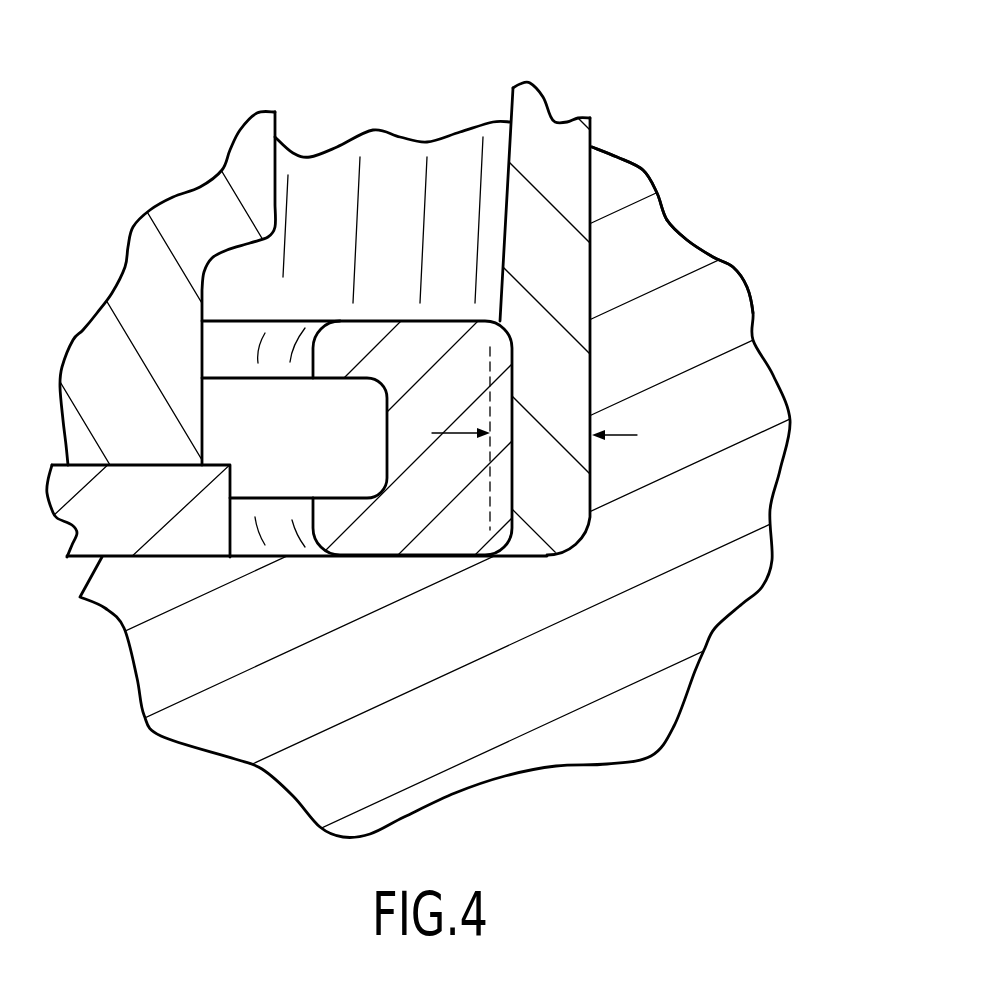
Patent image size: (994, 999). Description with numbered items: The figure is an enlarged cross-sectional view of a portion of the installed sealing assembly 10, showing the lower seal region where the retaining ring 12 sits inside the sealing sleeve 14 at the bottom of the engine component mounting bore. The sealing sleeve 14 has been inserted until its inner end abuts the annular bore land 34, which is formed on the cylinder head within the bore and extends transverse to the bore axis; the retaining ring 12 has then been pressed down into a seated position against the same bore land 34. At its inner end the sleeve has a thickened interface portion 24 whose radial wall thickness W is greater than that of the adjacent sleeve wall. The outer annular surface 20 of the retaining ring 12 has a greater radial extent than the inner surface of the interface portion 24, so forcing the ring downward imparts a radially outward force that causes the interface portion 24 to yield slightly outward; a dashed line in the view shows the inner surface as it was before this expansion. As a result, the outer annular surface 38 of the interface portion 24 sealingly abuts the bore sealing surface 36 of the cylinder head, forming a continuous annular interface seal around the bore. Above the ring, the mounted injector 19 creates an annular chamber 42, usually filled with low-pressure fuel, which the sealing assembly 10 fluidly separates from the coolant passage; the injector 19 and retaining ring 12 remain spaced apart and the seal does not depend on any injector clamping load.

The sealing assembly 10 is at (566, 88).
The retaining ring 12 is at (427, 342).
The sealing sleeve 14 is at (572, 143).
The injector 19 is at (203, 207).
The outer annular surface 20 is at (512, 462).
The interface portion 24 is at (562, 402).
The bore land 34 is at (293, 553).
The bore sealing surface 36 is at (592, 268).
The outer annular surface 38 is at (592, 297).
The annular chamber 42 is at (343, 180).